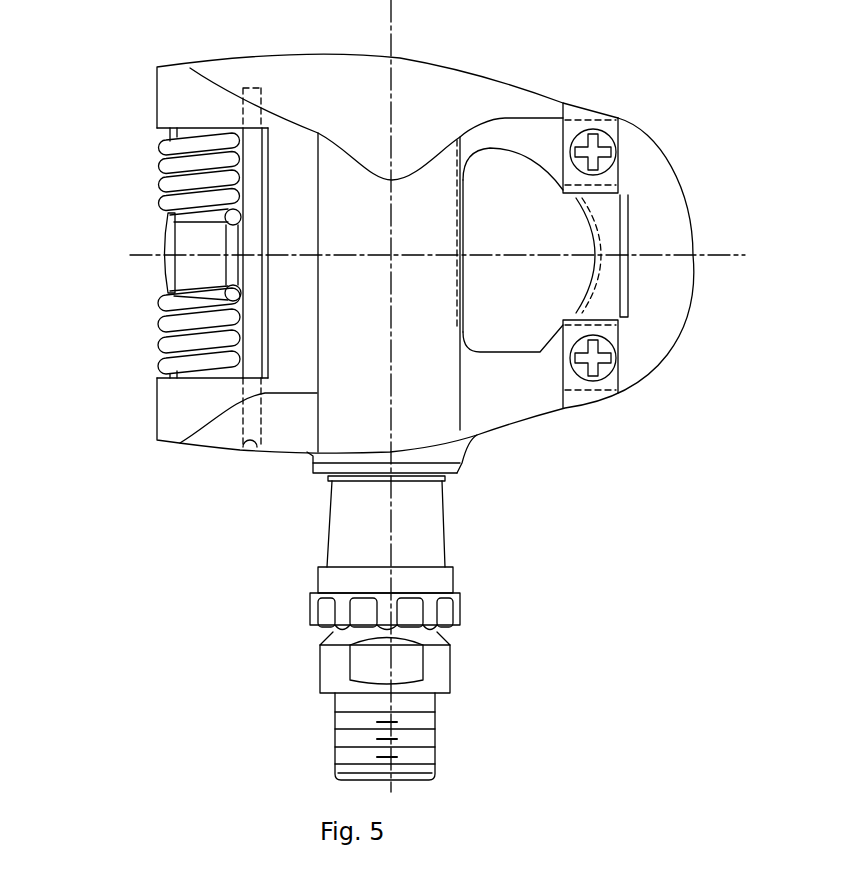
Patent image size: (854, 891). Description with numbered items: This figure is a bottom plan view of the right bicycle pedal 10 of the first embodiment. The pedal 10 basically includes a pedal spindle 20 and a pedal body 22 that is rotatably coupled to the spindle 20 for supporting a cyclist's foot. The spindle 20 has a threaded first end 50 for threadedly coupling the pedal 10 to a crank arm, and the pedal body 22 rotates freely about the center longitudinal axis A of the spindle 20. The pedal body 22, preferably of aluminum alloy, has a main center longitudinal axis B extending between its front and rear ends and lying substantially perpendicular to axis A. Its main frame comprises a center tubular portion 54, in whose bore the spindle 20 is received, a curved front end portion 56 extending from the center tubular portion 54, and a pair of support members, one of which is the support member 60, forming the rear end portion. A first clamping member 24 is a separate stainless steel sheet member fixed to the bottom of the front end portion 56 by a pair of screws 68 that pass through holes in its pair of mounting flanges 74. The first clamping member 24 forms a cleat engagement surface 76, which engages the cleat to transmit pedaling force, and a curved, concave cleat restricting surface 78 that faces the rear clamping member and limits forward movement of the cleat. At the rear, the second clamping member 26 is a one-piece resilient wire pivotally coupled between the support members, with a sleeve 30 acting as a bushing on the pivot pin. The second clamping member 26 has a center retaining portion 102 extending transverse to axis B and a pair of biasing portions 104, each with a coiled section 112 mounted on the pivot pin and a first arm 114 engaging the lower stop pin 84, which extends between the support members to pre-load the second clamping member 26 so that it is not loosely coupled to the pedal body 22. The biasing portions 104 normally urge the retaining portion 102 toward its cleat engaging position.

The bicycle pedal 10 is at (578, 60).
The pedal body 22 is at (478, 77).
The support member 60 is at (157, 85).
The coiled section 112 is at (185, 126).
The biasing portion 104 is at (155, 161).
The sleeve 30 is at (165, 238).
The center retaining portion 102 is at (160, 243).
The second clamping member 26 is at (153, 273).
The first arm 114 is at (242, 216).
The stop pin 84 is at (250, 320).
The mounting flange 74 is at (573, 127).
The screw 68 is at (607, 148).
The first clamping member 24 is at (577, 228).
The center tubular portion 54 is at (452, 290).
The cleat restricting surface 78 is at (585, 277).
The cleat engagement surface 76 is at (603, 300).
The curved front end portion 56 is at (667, 353).
The pedal spindle 20 is at (452, 662).
The first end 50 is at (430, 735).
The center longitudinal axis A is at (393, 35).
The main center longitudinal axis B is at (707, 254).